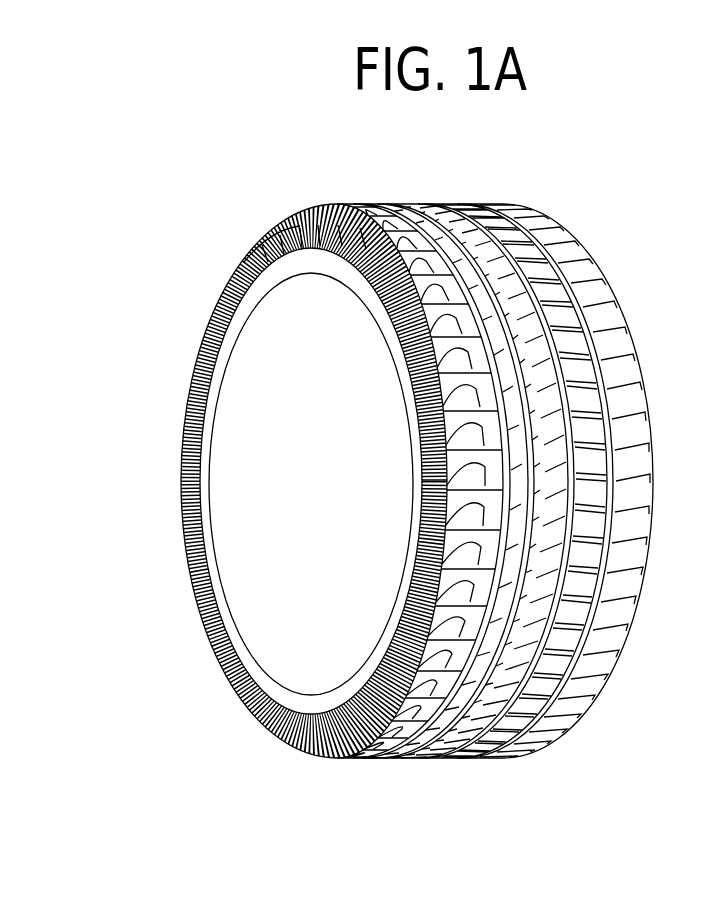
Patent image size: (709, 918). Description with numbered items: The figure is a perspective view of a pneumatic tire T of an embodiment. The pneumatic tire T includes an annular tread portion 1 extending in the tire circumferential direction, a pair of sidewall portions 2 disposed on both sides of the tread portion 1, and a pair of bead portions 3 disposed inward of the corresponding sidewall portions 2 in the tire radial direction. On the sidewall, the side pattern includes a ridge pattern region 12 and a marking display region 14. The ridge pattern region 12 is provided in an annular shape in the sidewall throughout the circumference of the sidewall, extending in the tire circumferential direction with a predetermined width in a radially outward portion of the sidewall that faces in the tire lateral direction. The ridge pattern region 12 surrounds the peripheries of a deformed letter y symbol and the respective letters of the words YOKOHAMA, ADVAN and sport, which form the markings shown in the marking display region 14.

The pneumatic tire T is at (521, 171).
The tread portion 1 is at (481, 189).
The sidewall portion 2 is at (222, 302).
The bead portion 3 is at (234, 382).
The ridge pattern region 12 is at (238, 262).
The marking display region 14 is at (307, 227).